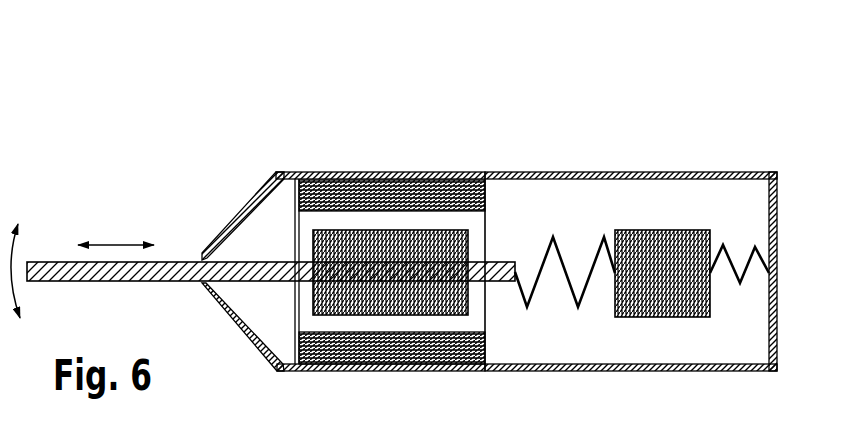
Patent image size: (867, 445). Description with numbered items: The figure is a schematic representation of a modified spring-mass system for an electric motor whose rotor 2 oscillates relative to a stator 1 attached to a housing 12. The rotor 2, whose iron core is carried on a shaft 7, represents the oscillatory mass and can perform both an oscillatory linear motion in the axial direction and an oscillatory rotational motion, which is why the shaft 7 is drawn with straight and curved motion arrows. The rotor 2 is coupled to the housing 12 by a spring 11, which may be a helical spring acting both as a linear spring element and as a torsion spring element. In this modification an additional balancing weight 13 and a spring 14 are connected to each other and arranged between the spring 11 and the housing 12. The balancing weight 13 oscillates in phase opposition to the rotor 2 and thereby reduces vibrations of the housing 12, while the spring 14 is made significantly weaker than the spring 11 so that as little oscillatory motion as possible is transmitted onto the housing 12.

The stator 1 is at (306, 173).
The rotor 2 is at (303, 243).
The shaft 7 is at (178, 262).
The spring 11 is at (548, 252).
The housing 12 is at (570, 172).
The balancing weight 13 is at (662, 230).
The spring 14 is at (747, 257).